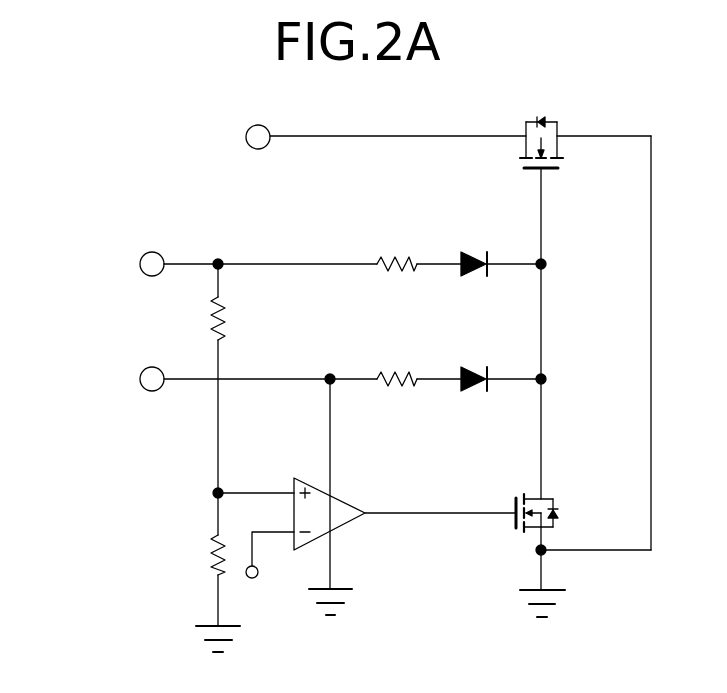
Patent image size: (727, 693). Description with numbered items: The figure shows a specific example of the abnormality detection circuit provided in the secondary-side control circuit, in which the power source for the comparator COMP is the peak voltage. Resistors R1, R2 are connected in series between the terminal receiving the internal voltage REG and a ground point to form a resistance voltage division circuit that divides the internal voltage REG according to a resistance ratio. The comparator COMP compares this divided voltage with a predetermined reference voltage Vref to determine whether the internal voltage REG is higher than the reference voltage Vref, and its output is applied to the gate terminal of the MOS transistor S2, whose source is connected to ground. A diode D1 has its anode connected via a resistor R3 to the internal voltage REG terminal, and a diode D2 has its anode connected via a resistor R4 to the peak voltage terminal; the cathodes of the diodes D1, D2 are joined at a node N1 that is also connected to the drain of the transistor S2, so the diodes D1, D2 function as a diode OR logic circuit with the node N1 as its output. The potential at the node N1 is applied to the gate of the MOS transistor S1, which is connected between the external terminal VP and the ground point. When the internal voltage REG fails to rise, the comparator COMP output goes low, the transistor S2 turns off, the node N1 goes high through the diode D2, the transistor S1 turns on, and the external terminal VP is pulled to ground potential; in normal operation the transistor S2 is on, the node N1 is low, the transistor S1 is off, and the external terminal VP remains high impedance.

The MOS transistor S1 is at (526, 132).
The MOS transistor S2 is at (548, 502).
The resistor R1 is at (198, 318).
The resistor R2 is at (197, 555).
The resistor R3 is at (397, 250).
The resistor R4 is at (397, 365).
The diode D1 is at (468, 253).
The diode D2 is at (468, 368).
The node N1 is at (547, 268).
The comparator COMP is at (340, 500).
The external terminal VP is at (236, 137).
The internal voltage REG is at (95, 277).
The reference voltage Vref is at (264, 569).